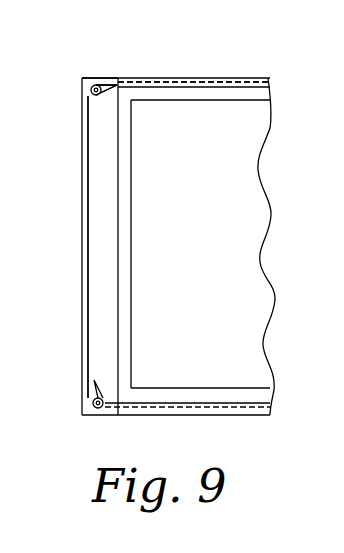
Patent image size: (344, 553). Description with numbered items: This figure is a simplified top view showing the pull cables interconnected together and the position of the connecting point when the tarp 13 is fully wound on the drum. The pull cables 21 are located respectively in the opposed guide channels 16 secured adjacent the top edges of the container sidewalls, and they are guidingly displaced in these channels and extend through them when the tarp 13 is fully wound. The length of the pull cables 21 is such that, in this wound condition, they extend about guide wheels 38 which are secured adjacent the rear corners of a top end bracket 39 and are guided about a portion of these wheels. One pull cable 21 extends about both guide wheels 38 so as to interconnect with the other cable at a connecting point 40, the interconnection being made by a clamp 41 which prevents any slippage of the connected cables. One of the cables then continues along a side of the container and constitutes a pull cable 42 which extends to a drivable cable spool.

The tarp 13 is at (223, 265).
The guide channel 16 is at (213, 415).
The pull cable 21 is at (89, 255).
The guide wheel 38 is at (98, 398).
The top end bracket 39 is at (102, 320).
The connecting point 40 is at (103, 74).
The clamp 41 is at (115, 87).
The pull cable 42 is at (185, 80).